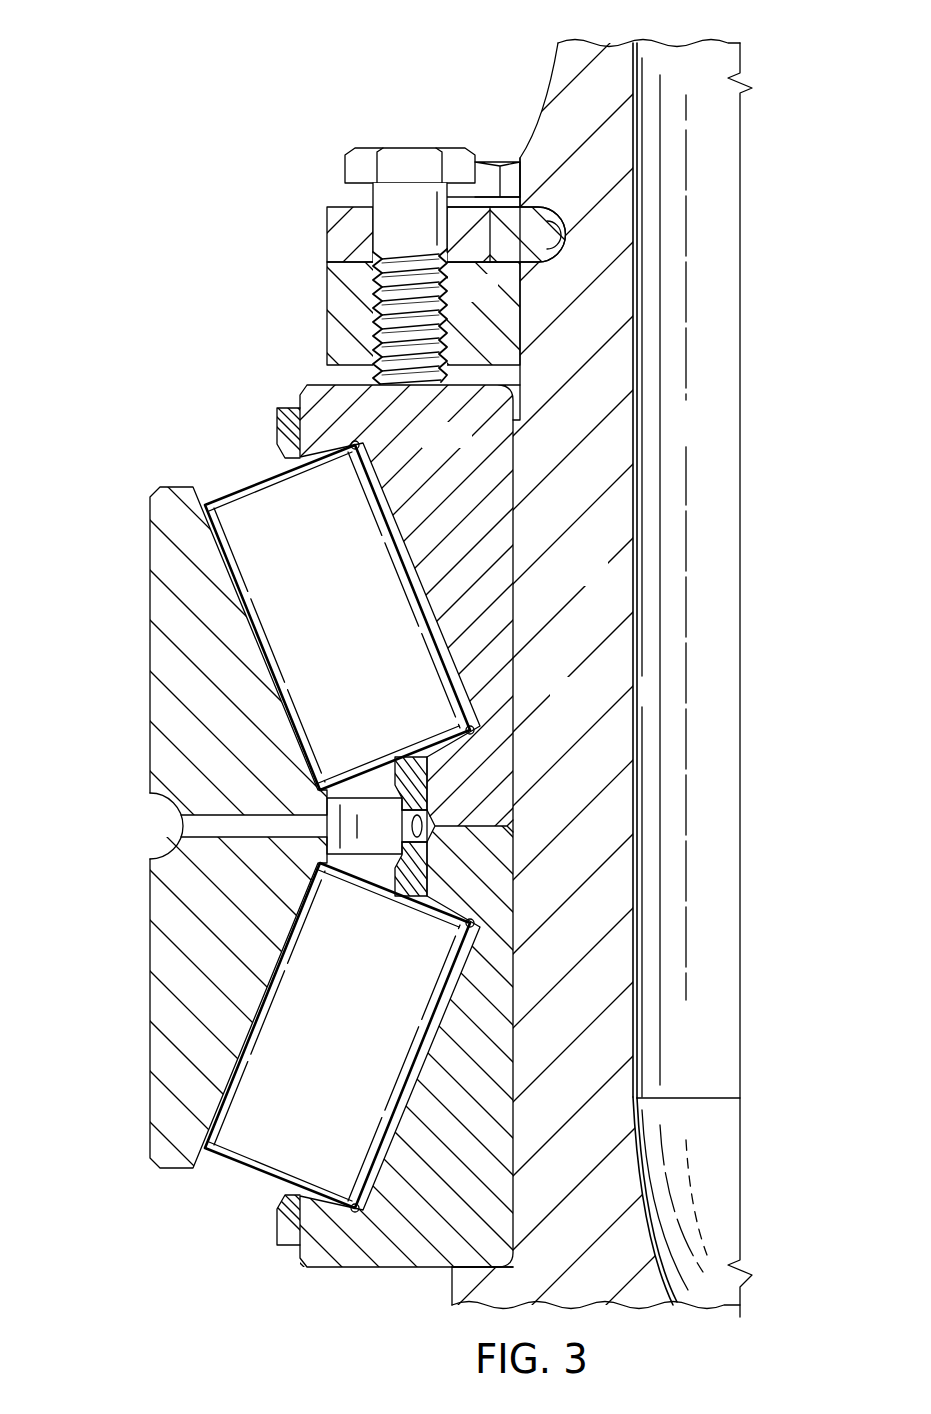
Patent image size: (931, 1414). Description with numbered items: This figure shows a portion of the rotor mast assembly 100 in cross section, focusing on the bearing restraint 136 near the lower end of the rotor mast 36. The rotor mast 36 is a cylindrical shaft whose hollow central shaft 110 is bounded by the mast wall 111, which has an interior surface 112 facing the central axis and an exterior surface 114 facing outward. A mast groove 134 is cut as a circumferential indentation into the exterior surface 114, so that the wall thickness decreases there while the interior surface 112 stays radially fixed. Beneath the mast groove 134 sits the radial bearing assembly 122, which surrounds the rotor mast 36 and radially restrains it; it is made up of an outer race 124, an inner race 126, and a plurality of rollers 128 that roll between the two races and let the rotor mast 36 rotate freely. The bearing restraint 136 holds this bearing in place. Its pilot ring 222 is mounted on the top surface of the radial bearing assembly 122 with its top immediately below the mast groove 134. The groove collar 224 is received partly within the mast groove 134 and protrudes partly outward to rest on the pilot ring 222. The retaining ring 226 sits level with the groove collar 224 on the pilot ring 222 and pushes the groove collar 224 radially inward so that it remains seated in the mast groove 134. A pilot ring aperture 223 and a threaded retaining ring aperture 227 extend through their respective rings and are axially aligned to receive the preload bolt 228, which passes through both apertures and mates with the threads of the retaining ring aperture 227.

The rotor mast assembly 100 is at (285, 60).
The hollow central shaft 110 is at (718, 162).
The mast wall 111 is at (533, 457).
The interior surface 112 is at (642, 680).
The exterior surface 114 is at (543, 120).
The radial bearing assembly 122 is at (140, 597).
The outer race 124 is at (158, 692).
The inner race 126 is at (497, 558).
The rollers 128 is at (265, 500).
The mast groove 134 is at (532, 228).
The bearing restraint 136 is at (318, 298).
The pilot ring 222 is at (337, 352).
The pilot ring aperture 223 is at (430, 330).
The groove collar 224 is at (525, 223).
The retaining ring 226 is at (330, 240).
The retaining ring aperture 227 is at (378, 230).
The preload bolt 228 is at (345, 167).
The rotor mast 36 is at (645, 428).